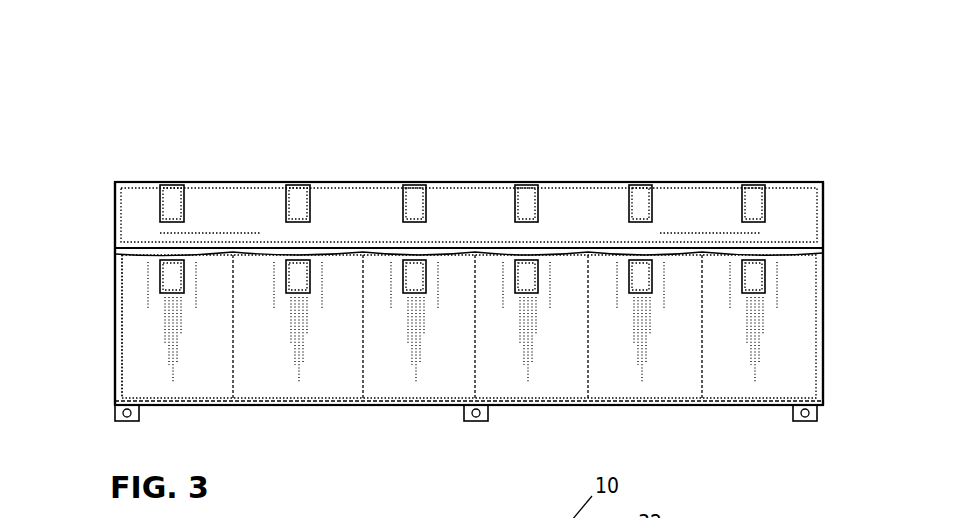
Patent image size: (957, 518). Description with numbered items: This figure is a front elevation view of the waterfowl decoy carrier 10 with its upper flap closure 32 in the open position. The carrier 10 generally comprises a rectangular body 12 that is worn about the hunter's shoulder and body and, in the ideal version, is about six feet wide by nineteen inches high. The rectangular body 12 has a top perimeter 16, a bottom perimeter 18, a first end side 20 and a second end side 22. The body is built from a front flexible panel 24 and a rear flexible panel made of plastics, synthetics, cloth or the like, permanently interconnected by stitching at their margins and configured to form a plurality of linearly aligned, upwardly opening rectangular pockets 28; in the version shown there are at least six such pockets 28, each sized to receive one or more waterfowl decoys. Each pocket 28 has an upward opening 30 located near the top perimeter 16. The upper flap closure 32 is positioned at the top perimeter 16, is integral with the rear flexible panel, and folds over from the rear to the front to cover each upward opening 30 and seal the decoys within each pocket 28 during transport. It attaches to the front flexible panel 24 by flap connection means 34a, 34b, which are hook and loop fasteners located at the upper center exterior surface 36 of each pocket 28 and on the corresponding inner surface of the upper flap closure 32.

The waterfowl decoy carrier 10 is at (640, 130).
The rectangular body 12 is at (112, 325).
The top perimeter 16 is at (115, 245).
The bottom perimeter 18 is at (315, 408).
The first end side 20 is at (112, 363).
The second end side 22 is at (822, 317).
The front flexible panel 24 is at (271, 296).
The pocket 28 is at (395, 247).
The upward opening 30 is at (148, 255).
The upper flap closure 32 is at (500, 180).
The flap connection means 34a is at (171, 205).
The flap connection means 34b is at (178, 293).
The upper center exterior surface 36 is at (662, 272).